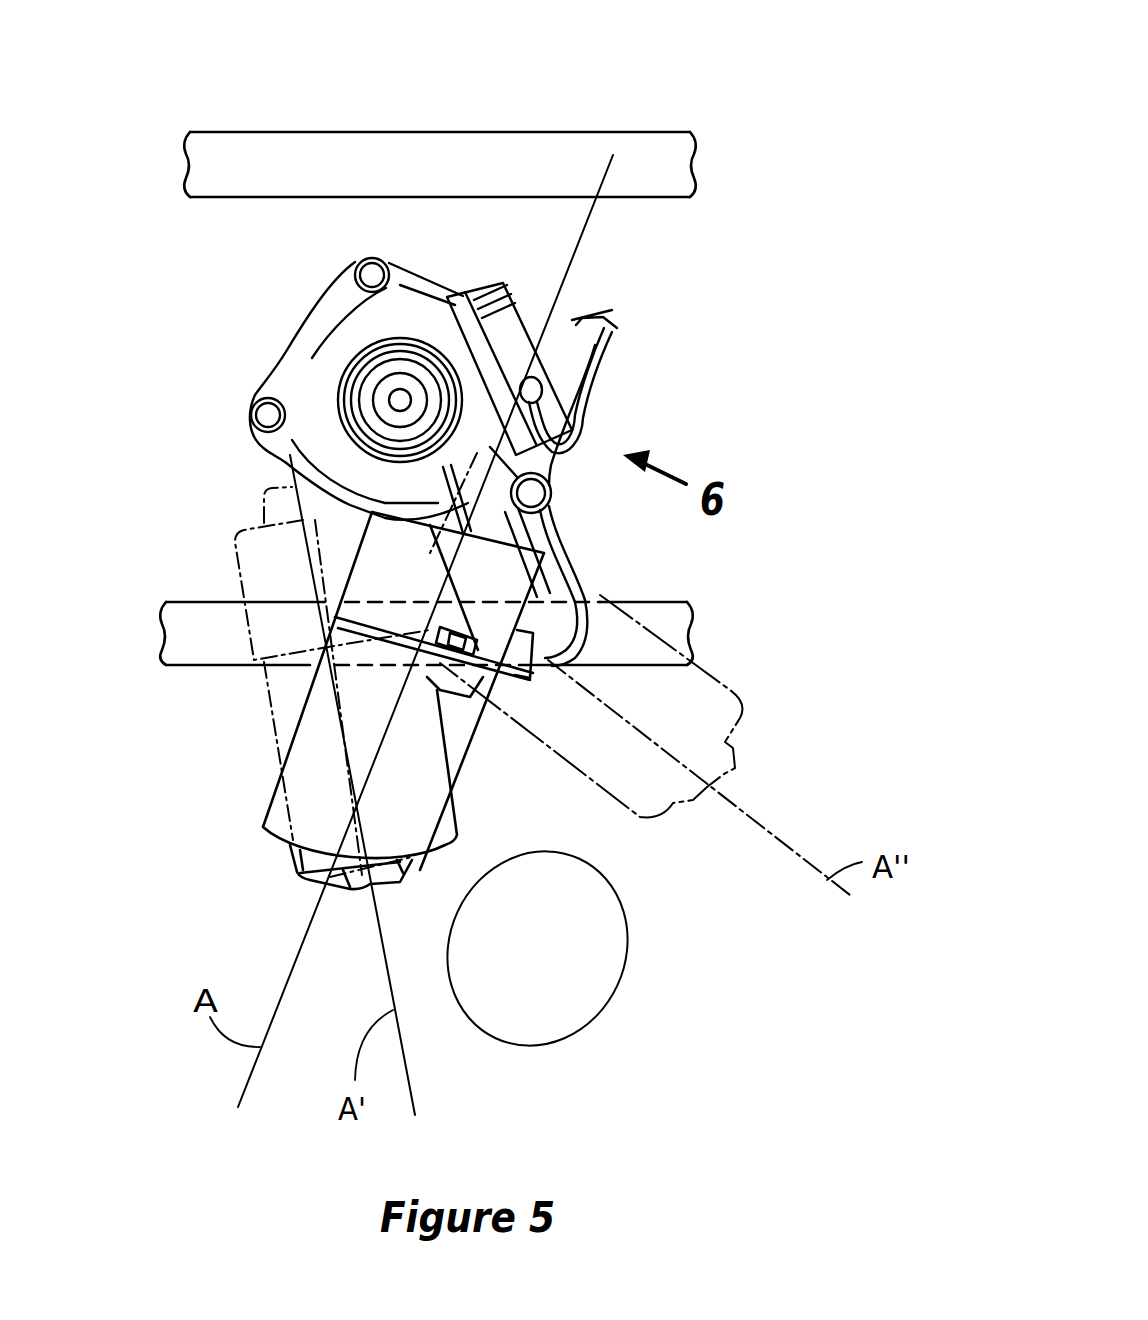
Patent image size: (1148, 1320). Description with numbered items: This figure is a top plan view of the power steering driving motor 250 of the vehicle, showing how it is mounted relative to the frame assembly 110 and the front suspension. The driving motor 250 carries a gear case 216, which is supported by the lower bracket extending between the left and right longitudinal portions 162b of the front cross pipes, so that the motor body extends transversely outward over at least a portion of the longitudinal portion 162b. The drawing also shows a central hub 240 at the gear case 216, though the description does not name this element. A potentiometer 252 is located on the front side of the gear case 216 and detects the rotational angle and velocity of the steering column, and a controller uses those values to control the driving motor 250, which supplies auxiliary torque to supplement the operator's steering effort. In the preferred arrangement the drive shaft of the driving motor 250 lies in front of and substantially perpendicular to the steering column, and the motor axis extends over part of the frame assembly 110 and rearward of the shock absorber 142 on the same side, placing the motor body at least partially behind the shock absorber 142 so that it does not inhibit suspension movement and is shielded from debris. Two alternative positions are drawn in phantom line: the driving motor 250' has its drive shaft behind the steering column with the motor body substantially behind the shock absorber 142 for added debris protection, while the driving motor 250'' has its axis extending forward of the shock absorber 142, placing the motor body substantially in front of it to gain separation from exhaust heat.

The frame assembly 110 is at (402, 397).
The longitudinal portion of the front cross pipe 162b is at (225, 198).
The gear case 216 is at (273, 357).
The output hub 240 is at (375, 372).
The potentiometer 252 is at (546, 320).
The driving motor 250 is at (414, 700).
The driving motor (alternative position) 250' is at (292, 690).
The driving motor (second alternative position) 250'' is at (640, 674).
The shock absorber 142 is at (603, 1010).